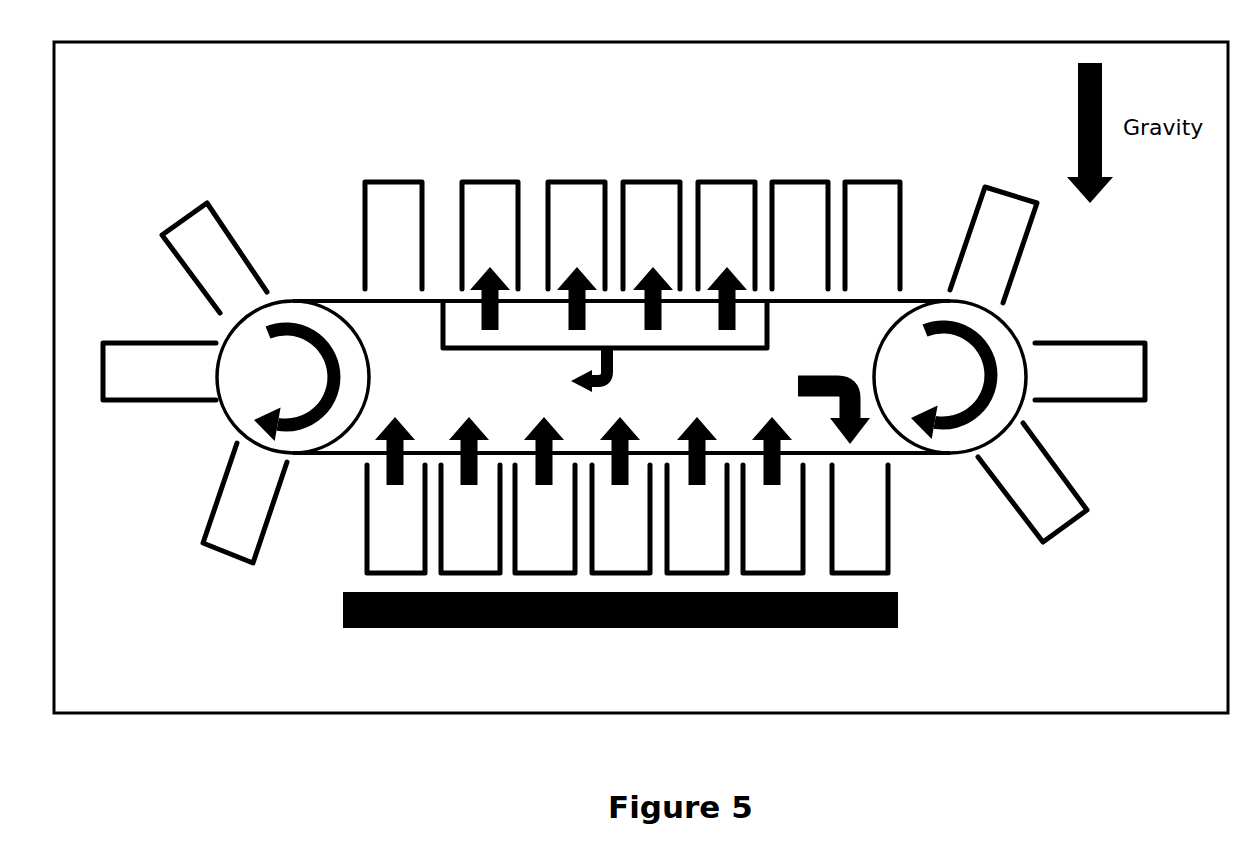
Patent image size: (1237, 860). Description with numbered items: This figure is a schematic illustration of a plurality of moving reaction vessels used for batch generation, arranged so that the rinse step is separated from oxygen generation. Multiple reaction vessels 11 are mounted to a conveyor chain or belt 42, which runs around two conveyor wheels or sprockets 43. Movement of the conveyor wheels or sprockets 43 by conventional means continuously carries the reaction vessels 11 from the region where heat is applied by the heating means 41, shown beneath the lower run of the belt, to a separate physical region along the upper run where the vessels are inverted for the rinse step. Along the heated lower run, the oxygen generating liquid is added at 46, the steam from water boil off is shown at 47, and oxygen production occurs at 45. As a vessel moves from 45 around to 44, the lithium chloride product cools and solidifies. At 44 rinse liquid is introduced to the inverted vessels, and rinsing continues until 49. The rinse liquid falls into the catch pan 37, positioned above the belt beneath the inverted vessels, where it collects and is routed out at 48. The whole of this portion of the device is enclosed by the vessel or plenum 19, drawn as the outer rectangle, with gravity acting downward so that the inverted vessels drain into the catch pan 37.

The vessel or plenum 19 is at (623, 40).
The reaction vessels 11 is at (183, 208).
The conveyor chain or belt 42 is at (907, 298).
The conveyor wheels or sprockets 43 is at (621, 377).
The catch pan 37 is at (584, 324).
The rinse liquid introduction point 44 is at (490, 268).
The rinse end point 49 is at (727, 262).
The oxygen production 45 is at (393, 487).
The steam from water boil off 47 is at (742, 418).
The oxygen generating liquid addition 46 is at (870, 427).
The rinse liquid outlet 48 is at (572, 371).
The heating means 41 is at (620, 636).